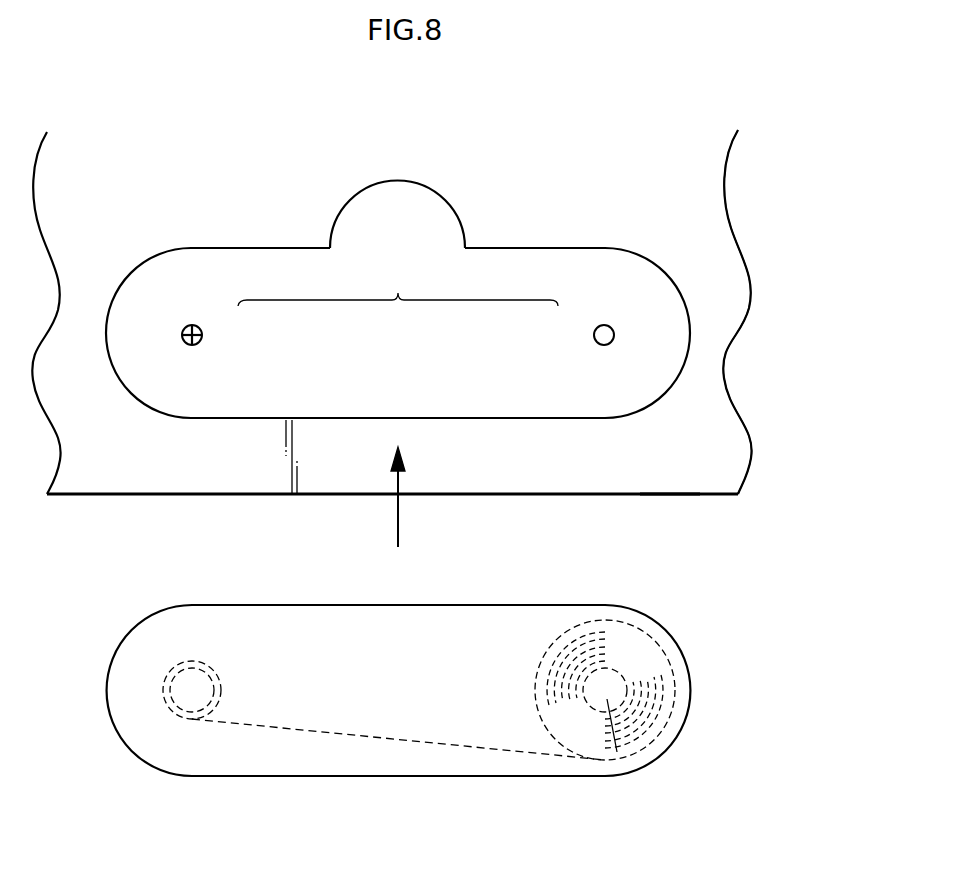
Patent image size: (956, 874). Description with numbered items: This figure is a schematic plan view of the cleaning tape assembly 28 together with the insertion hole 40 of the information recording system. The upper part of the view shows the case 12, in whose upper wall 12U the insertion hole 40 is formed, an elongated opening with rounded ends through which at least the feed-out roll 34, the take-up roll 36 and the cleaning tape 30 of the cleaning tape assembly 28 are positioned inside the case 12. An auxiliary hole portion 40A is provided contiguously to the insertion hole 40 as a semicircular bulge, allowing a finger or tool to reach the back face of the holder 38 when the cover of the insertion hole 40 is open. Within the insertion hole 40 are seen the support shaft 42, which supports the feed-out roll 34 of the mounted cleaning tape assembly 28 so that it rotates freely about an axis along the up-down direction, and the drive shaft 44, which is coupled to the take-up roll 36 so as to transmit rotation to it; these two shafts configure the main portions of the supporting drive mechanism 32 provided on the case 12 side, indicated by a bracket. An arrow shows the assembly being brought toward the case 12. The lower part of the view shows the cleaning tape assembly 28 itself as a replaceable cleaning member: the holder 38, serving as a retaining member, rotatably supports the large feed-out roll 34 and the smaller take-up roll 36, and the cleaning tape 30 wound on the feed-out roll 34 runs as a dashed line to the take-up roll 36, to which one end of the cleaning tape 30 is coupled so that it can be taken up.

The case 12 is at (571, 499).
The upper wall 12U is at (663, 473).
The cleaning tape assembly 28 is at (697, 647).
The cleaning tape 30 is at (436, 745).
The supporting drive mechanism 32 is at (398, 287).
The feed-out roll 34 is at (617, 752).
The take-up roll 36 is at (200, 688).
The holder 38 is at (366, 752).
The insertion hole 40 is at (398, 288).
The auxiliary hole portion 40A is at (447, 208).
The support shaft 42 is at (594, 333).
The drive shaft 44 is at (203, 331).